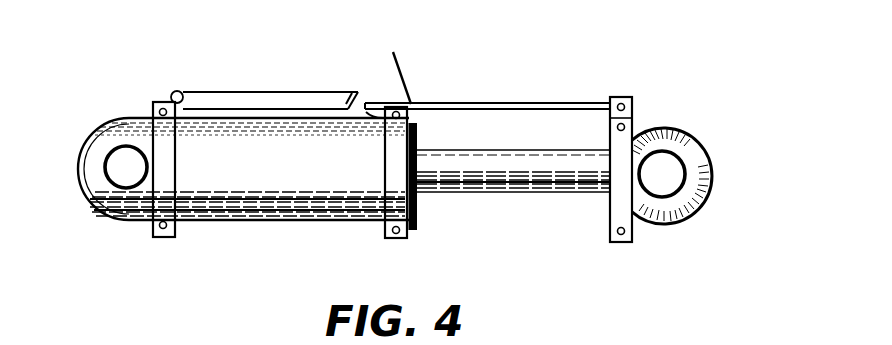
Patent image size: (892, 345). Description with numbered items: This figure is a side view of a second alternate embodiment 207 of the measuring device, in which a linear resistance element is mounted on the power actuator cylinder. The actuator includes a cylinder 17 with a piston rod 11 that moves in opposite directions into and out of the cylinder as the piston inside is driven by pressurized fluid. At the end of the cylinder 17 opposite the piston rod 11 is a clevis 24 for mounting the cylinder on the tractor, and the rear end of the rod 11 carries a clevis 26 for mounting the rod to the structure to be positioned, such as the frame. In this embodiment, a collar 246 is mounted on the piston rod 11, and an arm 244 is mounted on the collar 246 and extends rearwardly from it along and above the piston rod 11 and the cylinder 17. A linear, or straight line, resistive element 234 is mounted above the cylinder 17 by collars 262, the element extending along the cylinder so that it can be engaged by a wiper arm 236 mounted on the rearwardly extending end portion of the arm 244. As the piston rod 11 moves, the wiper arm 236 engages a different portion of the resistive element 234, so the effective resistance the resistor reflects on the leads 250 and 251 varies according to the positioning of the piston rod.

The piston rod 11 is at (563, 195).
The cylinder 17 is at (307, 225).
The clevis 24 is at (90, 134).
The clevis 26 is at (675, 173).
The second alternate embodiment 207 is at (489, 222).
The linear resistive element 234 is at (270, 95).
The wiper arm 236 is at (428, 103).
The arm 244 is at (535, 107).
The collar 246 is at (632, 127).
The lead 250 is at (178, 91).
The lead 251 is at (411, 52).
The collars 262 is at (297, 203).